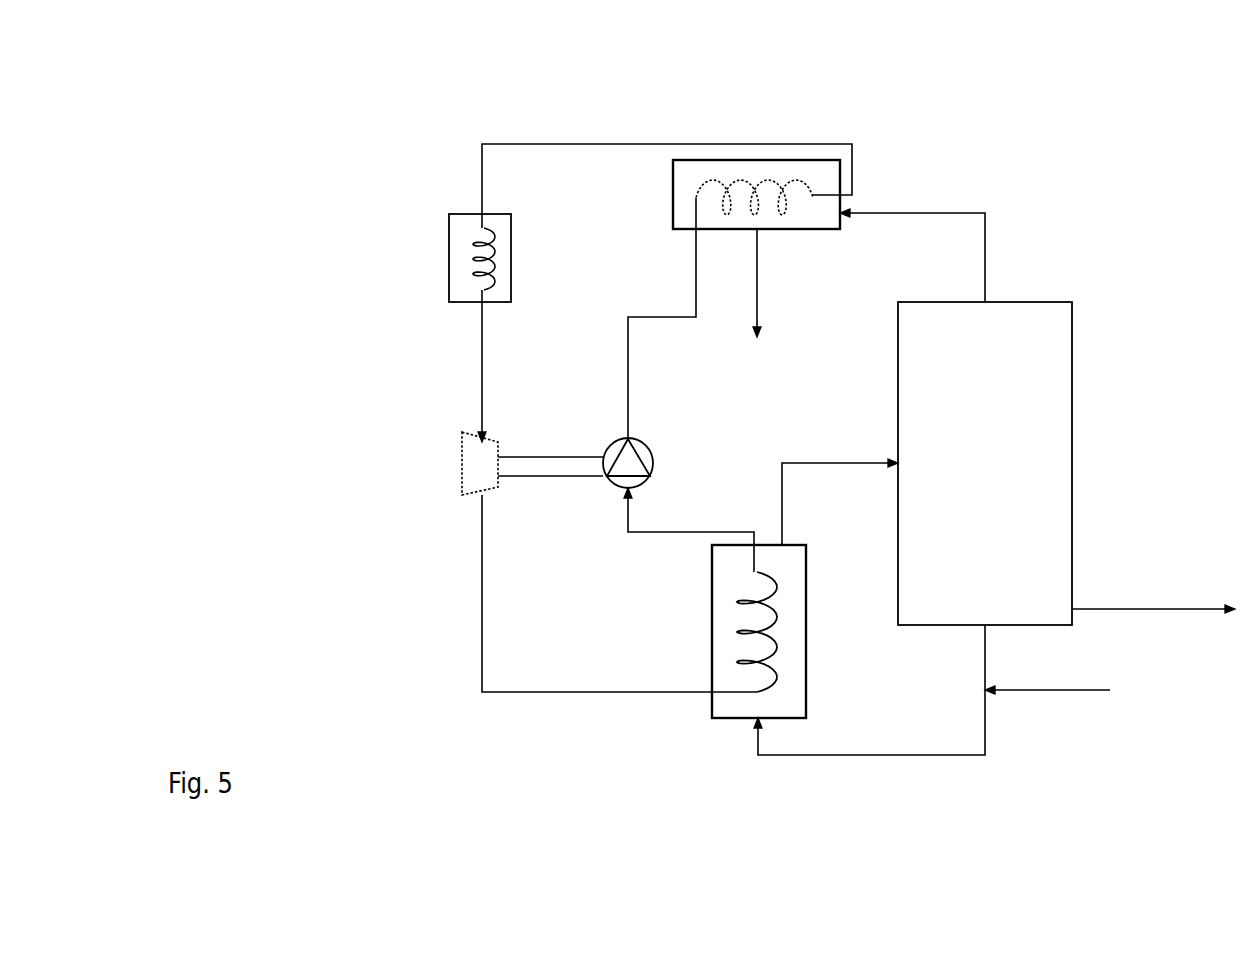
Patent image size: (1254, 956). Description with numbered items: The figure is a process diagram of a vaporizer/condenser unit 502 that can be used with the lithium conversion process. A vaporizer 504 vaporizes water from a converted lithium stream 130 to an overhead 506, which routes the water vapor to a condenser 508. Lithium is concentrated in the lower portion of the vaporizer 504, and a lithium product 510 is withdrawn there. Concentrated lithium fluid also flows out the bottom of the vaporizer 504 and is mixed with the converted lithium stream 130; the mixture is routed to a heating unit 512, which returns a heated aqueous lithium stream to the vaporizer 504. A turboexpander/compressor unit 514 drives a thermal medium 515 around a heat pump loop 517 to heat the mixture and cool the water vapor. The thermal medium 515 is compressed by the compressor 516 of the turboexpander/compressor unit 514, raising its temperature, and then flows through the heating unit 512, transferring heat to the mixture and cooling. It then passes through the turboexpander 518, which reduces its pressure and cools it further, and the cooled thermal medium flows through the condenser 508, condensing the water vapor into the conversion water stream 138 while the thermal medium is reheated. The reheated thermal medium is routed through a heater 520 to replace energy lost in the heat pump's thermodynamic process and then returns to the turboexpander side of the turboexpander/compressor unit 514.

The vaporizer/condenser unit 502 is at (356, 703).
The vaporizer 504 is at (985, 463).
The overhead 506 is at (985, 262).
The condenser 508 is at (805, 232).
The conversion water stream 138 is at (757, 295).
The thermal medium 515 is at (482, 144).
The heat pump loop 517 is at (756, 118).
The heater 520 is at (449, 233).
The turboexpander/compressor unit 514 is at (392, 474).
The compressor 516 is at (462, 437).
The turboexpander 518 is at (653, 462).
The heating unit 512 is at (720, 720).
The lithium product 510 is at (1152, 609).
The converted lithium stream 130 is at (1072, 690).